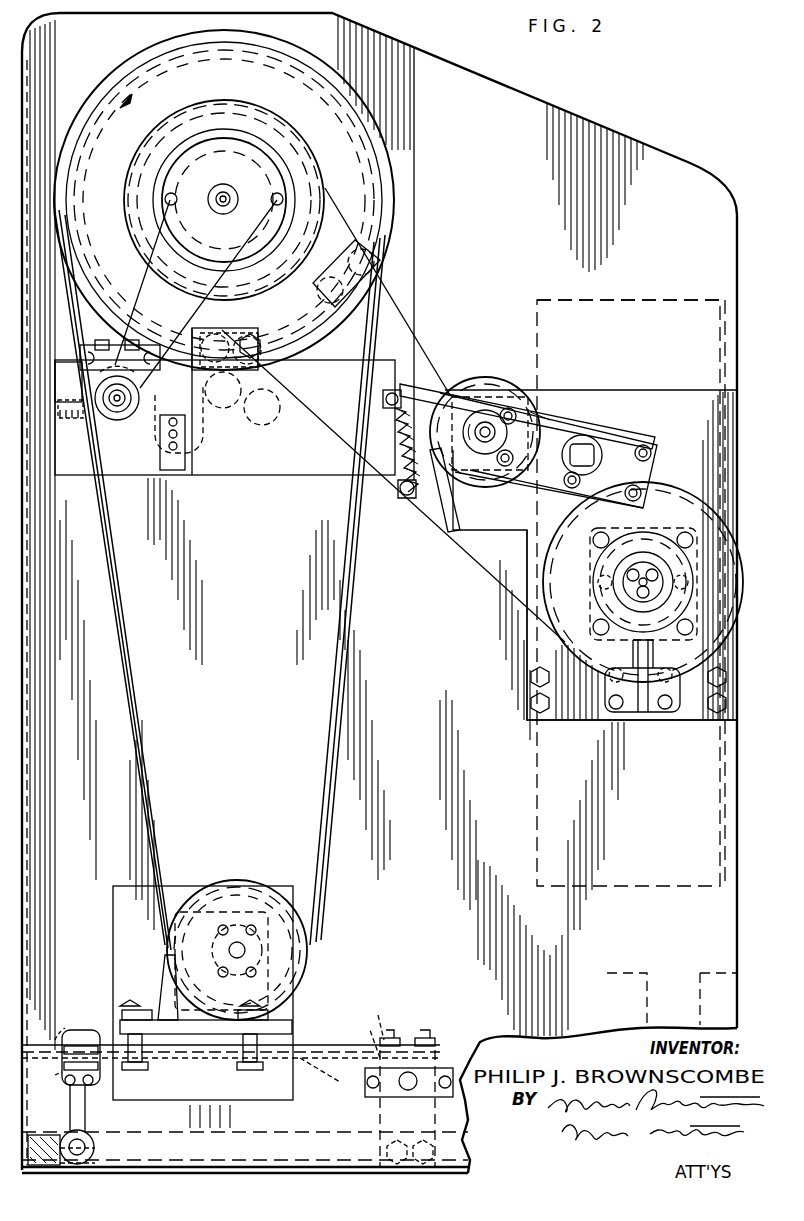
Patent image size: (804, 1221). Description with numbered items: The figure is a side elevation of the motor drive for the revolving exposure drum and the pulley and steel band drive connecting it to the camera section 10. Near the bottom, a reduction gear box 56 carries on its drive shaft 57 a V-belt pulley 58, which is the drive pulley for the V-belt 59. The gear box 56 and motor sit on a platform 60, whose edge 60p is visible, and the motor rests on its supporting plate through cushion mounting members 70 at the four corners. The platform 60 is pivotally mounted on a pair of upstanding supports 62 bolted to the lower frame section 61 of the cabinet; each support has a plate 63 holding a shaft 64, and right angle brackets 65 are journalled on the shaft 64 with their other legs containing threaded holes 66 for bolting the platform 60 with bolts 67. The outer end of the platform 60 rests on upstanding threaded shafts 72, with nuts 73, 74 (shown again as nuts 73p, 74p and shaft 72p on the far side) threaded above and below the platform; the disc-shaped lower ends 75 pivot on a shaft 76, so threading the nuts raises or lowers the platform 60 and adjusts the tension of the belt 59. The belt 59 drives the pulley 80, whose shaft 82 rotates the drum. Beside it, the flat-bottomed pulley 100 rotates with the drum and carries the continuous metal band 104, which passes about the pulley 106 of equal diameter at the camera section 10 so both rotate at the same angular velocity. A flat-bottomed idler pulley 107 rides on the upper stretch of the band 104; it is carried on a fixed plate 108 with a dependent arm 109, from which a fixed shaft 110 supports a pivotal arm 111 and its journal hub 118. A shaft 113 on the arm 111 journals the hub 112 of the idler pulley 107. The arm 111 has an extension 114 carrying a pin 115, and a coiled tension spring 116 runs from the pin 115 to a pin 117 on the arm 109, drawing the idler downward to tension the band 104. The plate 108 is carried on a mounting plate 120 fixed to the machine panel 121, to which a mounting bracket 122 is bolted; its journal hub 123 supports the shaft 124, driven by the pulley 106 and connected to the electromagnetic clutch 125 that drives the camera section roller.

The camera section 10 is at (522, 666).
The reduction gear box 56 is at (256, 948).
The drive shaft 57 is at (228, 952).
The V-belt pulley 58 is at (308, 968).
The V-belt 59 is at (155, 752).
The platform 60 is at (320, 1044).
The mounting plate edge 60p is at (324, 1076).
The lower frame section 61 is at (48, 1132).
The upstanding supports 62 is at (378, 1116).
The plate 63 is at (448, 1068).
The shaft 64 is at (369, 1019).
The right angle brackets 65 is at (425, 1088).
The threaded holes 66 is at (418, 1040).
The bolts 67 is at (392, 1026).
The cushion mounting members 70 is at (148, 1064).
The upstanding threaded shafts 72 is at (80, 1030).
The lower bracket 72p is at (50, 1049).
The nuts 73 is at (92, 1030).
The lower bracket bolt 73p is at (49, 1082).
The nuts 74 is at (150, 1030).
The support rods 74p is at (92, 1082).
The lower ends 75 is at (96, 1146).
The shaft 76 is at (100, 1158).
The pulley 80 is at (132, 54).
The shaft 82 is at (226, 196).
The pulley 100 is at (232, 110).
The metal band 104 is at (325, 195).
The pulley 106 is at (588, 570).
The idler pulley 107 is at (511, 385).
The plate 108 is at (616, 440).
The dependent arm 109 is at (446, 498).
The fixed shaft 110 is at (594, 452).
The pivotal arm 111 is at (560, 428).
The hub 112 is at (500, 436).
The shaft 113 is at (485, 429).
The extension 114 is at (432, 382).
The pin 115 is at (394, 382).
The tension spring 116 is at (400, 446).
The pin 117 is at (404, 503).
The journal hub 118 is at (602, 476).
The mounting plate 120 is at (704, 456).
The panel 121 is at (442, 650).
The mounting bracket 122 is at (662, 700).
The journal hub 123 is at (652, 538).
The shaft 124 is at (652, 590).
The clutch 125 is at (655, 568).